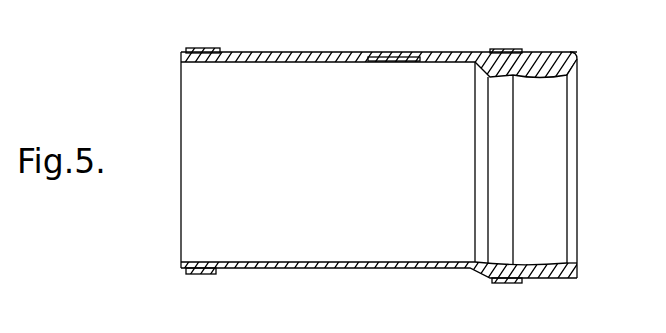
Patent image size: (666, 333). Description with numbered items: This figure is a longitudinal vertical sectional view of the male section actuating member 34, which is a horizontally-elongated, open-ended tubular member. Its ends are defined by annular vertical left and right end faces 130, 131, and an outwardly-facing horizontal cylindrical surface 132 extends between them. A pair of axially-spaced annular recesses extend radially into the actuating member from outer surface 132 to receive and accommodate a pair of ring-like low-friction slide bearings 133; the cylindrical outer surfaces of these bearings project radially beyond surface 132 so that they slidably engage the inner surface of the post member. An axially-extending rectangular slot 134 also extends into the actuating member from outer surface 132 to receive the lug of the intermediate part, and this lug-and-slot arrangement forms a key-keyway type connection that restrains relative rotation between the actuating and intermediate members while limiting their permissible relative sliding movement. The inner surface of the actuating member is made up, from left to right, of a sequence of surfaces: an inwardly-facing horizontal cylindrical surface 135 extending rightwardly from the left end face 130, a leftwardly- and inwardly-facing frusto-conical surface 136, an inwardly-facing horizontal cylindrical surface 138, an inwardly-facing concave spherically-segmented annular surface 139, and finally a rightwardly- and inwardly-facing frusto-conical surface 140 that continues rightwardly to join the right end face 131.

The actuating member 34 is at (578, 88).
The left end face 130 is at (181, 84).
The right end face 131 is at (577, 121).
The outwardly-facing horizontal cylindrical surface 132 is at (307, 52).
The slide bearings 133 is at (202, 274).
The rectangular slot 134 is at (400, 52).
The inwardly-facing horizontal cylindrical surface 135 is at (288, 262).
The leftwardly- and inwardly-facing frusto-conical surface 136 is at (476, 262).
The inwardly-facing horizontal cylindrical surface 138 is at (486, 262).
The concave spherically-segmented annular surface 139 is at (546, 263).
The rightwardly- and inwardly-facing frusto-conical surface 140 is at (568, 262).